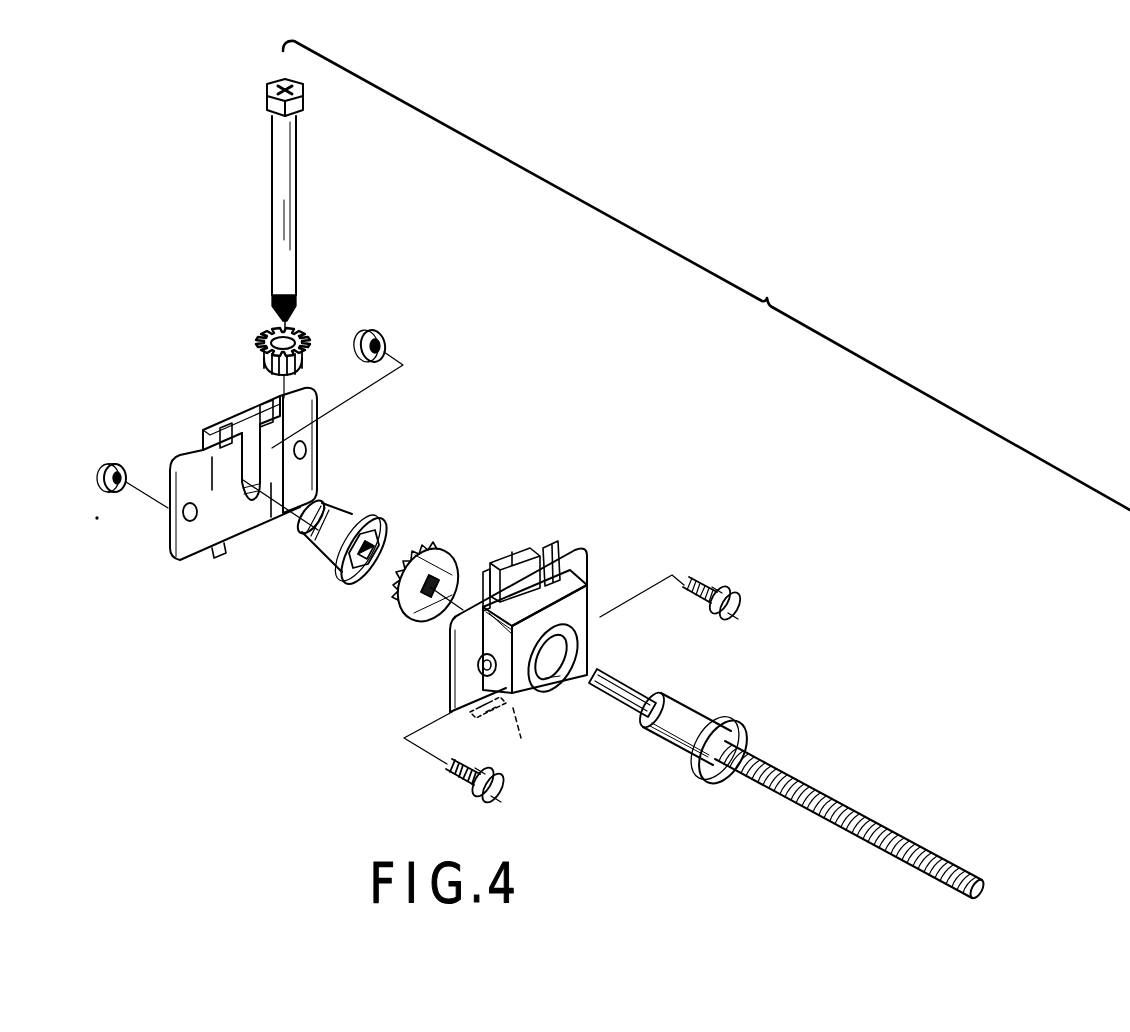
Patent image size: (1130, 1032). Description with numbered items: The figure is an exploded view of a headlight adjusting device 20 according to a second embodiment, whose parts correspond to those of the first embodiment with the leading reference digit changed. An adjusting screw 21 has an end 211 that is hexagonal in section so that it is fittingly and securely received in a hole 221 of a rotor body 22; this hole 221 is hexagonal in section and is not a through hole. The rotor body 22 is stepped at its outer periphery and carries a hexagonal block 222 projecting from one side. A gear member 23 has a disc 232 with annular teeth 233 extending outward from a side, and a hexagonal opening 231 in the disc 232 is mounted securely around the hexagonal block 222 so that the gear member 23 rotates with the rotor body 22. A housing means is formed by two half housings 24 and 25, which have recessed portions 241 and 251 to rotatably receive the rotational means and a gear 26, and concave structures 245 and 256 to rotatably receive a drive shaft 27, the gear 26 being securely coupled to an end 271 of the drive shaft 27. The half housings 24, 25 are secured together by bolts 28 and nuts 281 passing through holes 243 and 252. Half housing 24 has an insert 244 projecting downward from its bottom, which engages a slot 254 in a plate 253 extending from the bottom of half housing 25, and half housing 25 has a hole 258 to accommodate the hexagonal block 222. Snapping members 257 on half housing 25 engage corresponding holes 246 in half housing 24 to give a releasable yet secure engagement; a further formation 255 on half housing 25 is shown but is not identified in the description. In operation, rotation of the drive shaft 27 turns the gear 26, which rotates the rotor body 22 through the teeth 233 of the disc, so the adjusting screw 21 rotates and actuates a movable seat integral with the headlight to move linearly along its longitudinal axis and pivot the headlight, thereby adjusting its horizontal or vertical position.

The headlight adjusting device 20 is at (706, 275).
The adjusting screw 21 is at (787, 762).
The end of adjusting screw 211 is at (638, 668).
The rotor body 22 is at (366, 519).
The hole in rotor body 221 is at (378, 542).
The hexagonal block 222 is at (365, 520).
The gear member 23 is at (383, 581).
The hexagonal opening 231 is at (428, 604).
The disc 232 is at (396, 594).
The annular teeth 233 is at (388, 588).
The half housing 24 is at (269, 488).
The recessed portion 241 is at (240, 453).
The hole 243 is at (318, 437).
The insert 244 is at (222, 552).
The concave structure 245 is at (246, 395).
The holes 246 is at (283, 401).
The half housing 25 is at (530, 614).
The recessed portion 251 is at (565, 642).
The hole 252 is at (479, 666).
The plate 253 is at (476, 714).
The slot 254 is at (526, 736).
The tab 255 is at (553, 546).
The concave structure 256 is at (520, 562).
The snapping members 257 is at (486, 578).
The hole 258 is at (553, 666).
The gear 26 is at (300, 332).
The drive shaft 27 is at (317, 205).
The end of drive shaft 271 is at (299, 300).
The bolts 28 is at (716, 582).
The nuts 281 is at (386, 342).